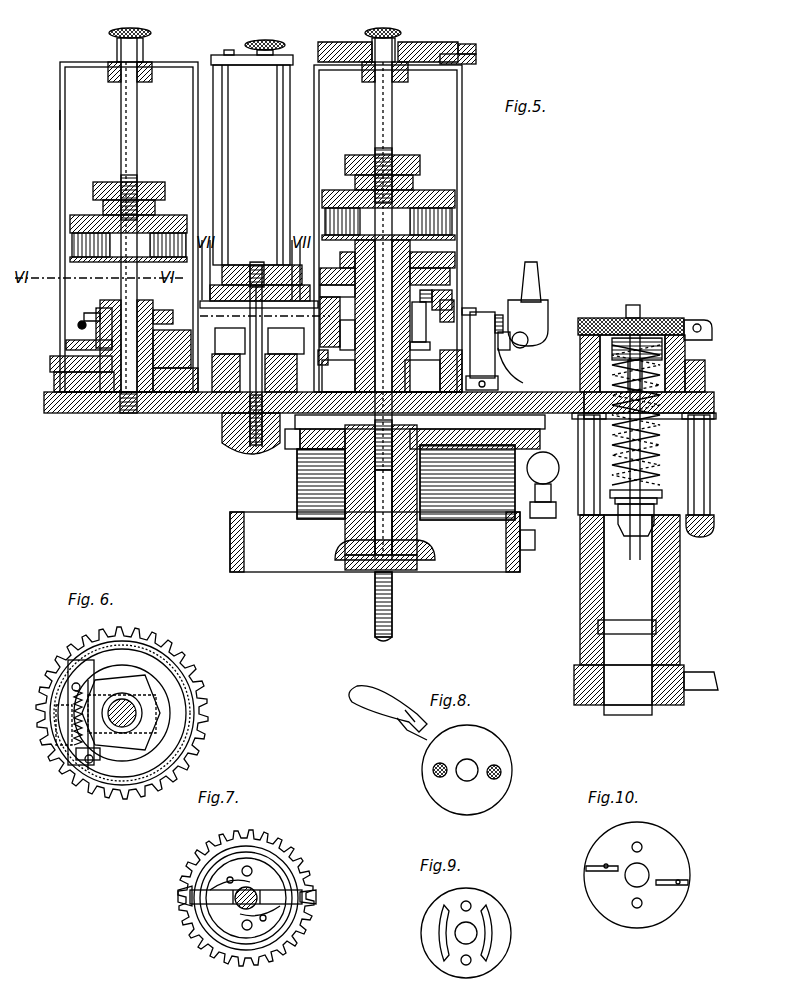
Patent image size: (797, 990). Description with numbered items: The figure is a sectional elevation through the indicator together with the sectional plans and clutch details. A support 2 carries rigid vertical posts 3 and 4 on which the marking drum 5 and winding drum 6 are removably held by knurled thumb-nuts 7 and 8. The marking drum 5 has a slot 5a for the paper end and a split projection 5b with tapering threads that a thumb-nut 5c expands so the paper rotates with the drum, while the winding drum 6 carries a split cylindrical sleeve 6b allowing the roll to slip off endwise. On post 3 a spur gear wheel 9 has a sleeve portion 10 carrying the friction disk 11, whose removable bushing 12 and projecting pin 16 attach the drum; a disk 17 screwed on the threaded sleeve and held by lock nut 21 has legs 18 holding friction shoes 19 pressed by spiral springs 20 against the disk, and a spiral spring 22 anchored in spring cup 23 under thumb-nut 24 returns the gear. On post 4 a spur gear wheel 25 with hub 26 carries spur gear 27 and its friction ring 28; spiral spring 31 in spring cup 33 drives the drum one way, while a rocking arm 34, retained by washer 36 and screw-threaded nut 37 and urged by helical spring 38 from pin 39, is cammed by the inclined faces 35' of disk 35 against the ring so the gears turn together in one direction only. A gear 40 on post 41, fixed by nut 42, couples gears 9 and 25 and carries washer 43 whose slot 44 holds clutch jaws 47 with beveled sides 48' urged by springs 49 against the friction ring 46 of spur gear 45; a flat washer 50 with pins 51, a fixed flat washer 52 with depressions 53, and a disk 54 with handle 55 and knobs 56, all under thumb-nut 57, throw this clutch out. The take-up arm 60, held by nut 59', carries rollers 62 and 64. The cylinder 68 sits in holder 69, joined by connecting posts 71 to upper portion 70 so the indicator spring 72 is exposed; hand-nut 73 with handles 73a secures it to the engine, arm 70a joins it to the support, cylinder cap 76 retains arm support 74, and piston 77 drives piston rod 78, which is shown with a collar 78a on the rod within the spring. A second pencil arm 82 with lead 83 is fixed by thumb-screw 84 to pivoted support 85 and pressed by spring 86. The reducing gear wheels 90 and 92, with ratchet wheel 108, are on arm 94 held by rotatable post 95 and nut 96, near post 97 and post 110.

In FIG. 5, the support 2 is at (96, 413).
In FIG. 5, the vertical post 3 is at (393, 112).
In FIG. 5, the vertical post 4 is at (130, 215).
In FIG. 6, the vertical post 4 is at (128, 708).
In FIG. 5, the marking drum 5 is at (462, 88).
In FIG. 5, the slot 5a is at (462, 45).
In FIG. 5, the split projection 5b is at (462, 58).
In FIG. 5, the thumb-nut 5c is at (425, 44).
In FIG. 5, the winding drum 6 is at (129, 227).
In FIG. 5, the cylindrical sleeve 6b is at (60, 125).
In FIG. 5, the knurled thumb-nut 7 is at (390, 30).
In FIG. 5, the knurled thumb-nut 8 is at (109, 33).
In FIG. 5, the spur gear wheel 9 is at (422, 376).
In FIG. 5, the sleeve portion 10 is at (428, 250).
In FIG. 5, the friction disk 11 is at (343, 335).
In FIG. 5, the removable bushing 12 is at (455, 369).
In FIG. 5, the projecting pin 16 is at (320, 322).
In FIG. 5, the disk 17 is at (330, 268).
In FIG. 5, the legs 18 is at (350, 290).
In FIG. 5, the friction shoe 19 is at (410, 328).
In FIG. 5, the spiral spring 20 is at (450, 292).
In FIG. 5, the lock nut 21 is at (430, 262).
In FIG. 5, the spiral spring 22 is at (455, 220).
In FIG. 5, the spring cup 23 is at (455, 198).
In FIG. 5, the thumb-nut 24 is at (420, 165).
In FIG. 5, the spur gear wheel 25 is at (54, 382).
In FIG. 5, the hub 26 is at (112, 262).
In FIG. 6, the hub 26 is at (150, 700).
In FIG. 5, the spur gear 27 is at (50, 364).
In FIG. 6, the spur gear 27 is at (76, 750).
In FIG. 5, the friction ring 28 is at (96, 330).
In FIG. 6, the friction ring 28 is at (84, 762).
In FIG. 5, the spiral spring 31 is at (72, 247).
In FIG. 5, the spring cup 33 is at (70, 226).
In FIG. 5, the rocking arm 34 is at (66, 346).
In FIG. 6, the rocking arm 34 is at (84, 680).
In FIG. 5, the disk 35 is at (150, 417).
In FIG. 6, the disk 35 is at (122, 713).
In FIG. 6, the inclined faces 35' is at (75, 727).
In FIG. 5, the washer 36 is at (163, 350).
In FIG. 6, the washer 36 is at (62, 725).
In FIG. 5, the screw-threaded nut 37 is at (163, 318).
In FIG. 6, the screw-threaded nut 37 is at (150, 714).
In FIG. 5, the helical spring 38 is at (78, 325).
In FIG. 6, the helical spring 38 is at (74, 708).
In FIG. 5, the pin 39 is at (84, 316).
In FIG. 6, the pin 39 is at (72, 688).
In FIG. 5, the gear 40 is at (222, 392).
In FIG. 7, the gear 40 is at (222, 950).
In FIG. 5, the post 41 is at (251, 356).
In FIG. 7, the post 41 is at (240, 906).
In FIG. 5, the nut 42 is at (238, 440).
In FIG. 5, the washer 43 is at (200, 392).
In FIG. 7, the washer 43 is at (272, 875).
In FIG. 7, the slot 44 is at (188, 904).
In FIG. 7, the spur gear 45 is at (238, 950).
In FIG. 5, the friction ring 46 is at (336, 371).
In FIG. 5, the clutch jaws 47 is at (258, 360).
In FIG. 7, the clutch jaws 47 is at (178, 893).
In FIG. 7, the beveled side 48' is at (248, 907).
In FIG. 7, the springs 49 is at (218, 880).
In FIG. 5, the flat washer 50 is at (298, 290).
In FIG. 10, the flat washer 50 is at (637, 875).
In FIG. 10, the pins 51 is at (602, 873).
In FIG. 9, the flat washer 52 is at (488, 897).
In FIG. 9, the depressions 53 is at (440, 933).
In FIG. 5, the disk 54 is at (209, 256).
In FIG. 8, the disk 54 is at (467, 770).
In FIG. 8, the handle 55 is at (384, 728).
In FIG. 5, the knobs 56 is at (245, 270).
In FIG. 8, the knobs 56 is at (490, 778).
In FIG. 5, the thumb-nut 57 is at (298, 256).
In FIG. 5, the nut 59' is at (277, 33).
In FIG. 5, the arm 60 is at (232, 50).
In FIG. 5, the roller 62 is at (218, 78).
In FIG. 5, the roller 64 is at (251, 165).
In FIG. 5, the cylinder 68 is at (665, 600).
In FIG. 5, the cylinder holder 69 is at (670, 630).
In FIG. 5, the upper portion 70 is at (685, 370).
In FIG. 5, the arm 70a is at (621, 403).
In FIG. 5, the connecting posts 71 is at (710, 466).
In FIG. 5, the indicator spring 72 is at (650, 438).
In FIG. 5, the hand-nut 73 is at (678, 692).
In FIG. 5, the handles 73a is at (714, 681).
In FIG. 5, the support 74 is at (700, 345).
In FIG. 5, the cylinder cap 76 is at (680, 313).
In FIG. 5, the piston 77 is at (640, 560).
In FIG. 5, the piston rod 78 is at (644, 415).
In FIG. 5, the collar 78a is at (655, 495).
In FIG. 5, the second pencil arm 82 is at (497, 310).
In FIG. 5, the lead 83 is at (476, 306).
In FIG. 5, the thumb-screw 84 is at (538, 306).
In FIG. 5, the support 85 is at (482, 351).
In FIG. 5, the spring 86 is at (500, 375).
In FIG. 5, the wheel 90 is at (382, 542).
In FIG. 5, the wheel 92 is at (297, 498).
In FIG. 5, the arm 94 is at (440, 440).
In FIG. 5, the rotatable post 95 is at (352, 520).
In FIG. 5, the nut 96 is at (338, 548).
In FIG. 5, the post 97 is at (410, 606).
In FIG. 5, the ratchet wheel 108 is at (295, 440).
In FIG. 5, the post 110 is at (546, 485).